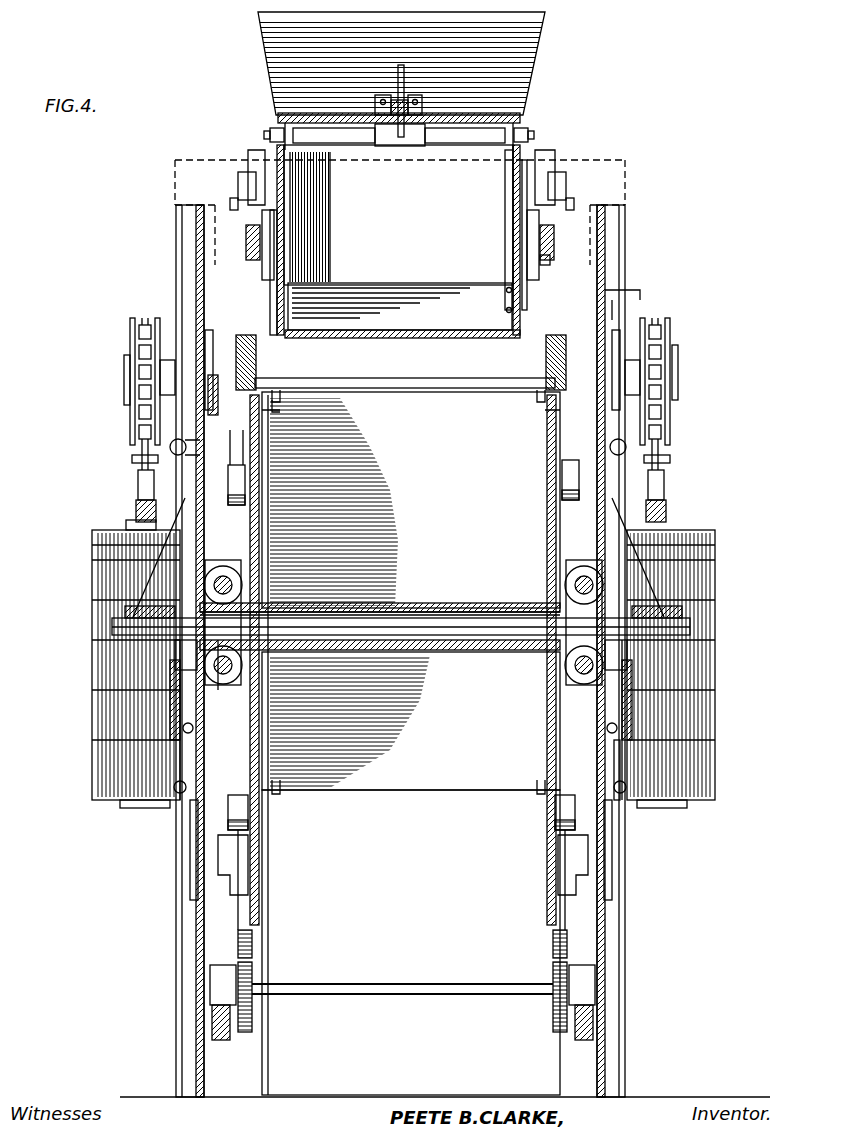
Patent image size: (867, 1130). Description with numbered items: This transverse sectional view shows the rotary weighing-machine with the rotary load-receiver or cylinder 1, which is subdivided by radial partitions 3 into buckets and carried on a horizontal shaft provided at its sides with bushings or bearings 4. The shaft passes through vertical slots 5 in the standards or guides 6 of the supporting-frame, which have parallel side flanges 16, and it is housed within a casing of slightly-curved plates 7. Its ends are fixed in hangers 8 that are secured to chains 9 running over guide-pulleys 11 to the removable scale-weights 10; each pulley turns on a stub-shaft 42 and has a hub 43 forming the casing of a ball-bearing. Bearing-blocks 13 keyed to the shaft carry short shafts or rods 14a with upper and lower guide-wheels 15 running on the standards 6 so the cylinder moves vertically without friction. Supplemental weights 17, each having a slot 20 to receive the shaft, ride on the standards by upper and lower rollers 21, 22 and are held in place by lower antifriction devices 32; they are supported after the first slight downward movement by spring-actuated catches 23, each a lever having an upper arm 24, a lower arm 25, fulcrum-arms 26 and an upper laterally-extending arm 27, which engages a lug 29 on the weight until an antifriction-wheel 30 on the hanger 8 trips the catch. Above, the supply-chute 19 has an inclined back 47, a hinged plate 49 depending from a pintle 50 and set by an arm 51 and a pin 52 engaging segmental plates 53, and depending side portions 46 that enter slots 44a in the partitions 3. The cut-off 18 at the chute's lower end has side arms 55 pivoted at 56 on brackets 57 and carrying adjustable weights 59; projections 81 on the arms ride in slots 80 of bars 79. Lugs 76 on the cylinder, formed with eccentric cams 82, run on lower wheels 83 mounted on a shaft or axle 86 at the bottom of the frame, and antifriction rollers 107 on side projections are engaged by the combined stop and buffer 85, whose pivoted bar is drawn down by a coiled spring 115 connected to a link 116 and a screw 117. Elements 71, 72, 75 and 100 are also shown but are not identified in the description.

The rotary load-receiver 1 is at (390, 782).
The radial partitions 3 is at (420, 800).
The bushings or bearings 4 is at (280, 603).
The vertical slots 5 is at (180, 668).
The vertical standards or guides 6 is at (190, 895).
The slightly-curved plates 7 is at (400, 610).
The hangers 8 is at (125, 612).
The chains 9 is at (146, 318).
The scale-weights 10 is at (92, 738).
The guide-pulleys 11 is at (130, 333).
The bearing-blocks 13 is at (175, 375).
The short shafts or rods 14a is at (565, 590).
The guide-wheels 15 is at (280, 718).
The parallel side flanges 16 is at (176, 870).
The supplemental weights 17 is at (180, 688).
The cut-off 18 is at (396, 338).
The supply-chute 19 is at (290, 36).
The slot 20 is at (175, 652).
The upper antifriction roller 21 is at (178, 447).
The lower antifriction roller 22 is at (183, 732).
The spring-actuated catches 23 is at (126, 524).
The upper arm 24 is at (138, 490).
The lower arm 25 is at (140, 548).
The fulcrum-arms 26 is at (136, 512).
The upper laterally-extending arm 27 is at (146, 470).
The lug or projection 29 is at (172, 442).
The antifriction-wheel 30 is at (186, 520).
The lower antifriction devices 32 is at (180, 795).
The stub-shaft 42 is at (178, 383).
The hub 43 is at (640, 372).
The slots 44a is at (280, 398).
The depending portions 46 is at (262, 350).
The bottom or back 47 is at (410, 305).
The hinged plate 49 is at (398, 240).
The shaft or pintle 50 is at (512, 125).
The centrally-arranged arm 51 is at (404, 72).
The pin or key 52 is at (408, 100).
The segmental plates 53 is at (422, 104).
The upwardly-extending arms 55 is at (270, 294).
The pivots 56 is at (246, 240).
The plates or brackets 57 is at (262, 178).
The adjustable weights 59 is at (238, 183).
The arm 71 is at (630, 300).
The arm 72 is at (638, 320).
The plate 75 is at (662, 341).
The lugs 76 is at (232, 875).
The bars 79 is at (262, 262).
The curved openings 80 is at (550, 262).
The projections 81 is at (522, 236).
The eccentrically-arranged cams 82 is at (252, 940).
The lower wheels 83 is at (252, 975).
The combined stop and buffer 85 is at (262, 445).
The transverse shaft or axle 86 is at (320, 996).
The bar 100 is at (245, 470).
The antifriction sleeves or rollers 107 is at (262, 490).
The coiled spring 115 is at (220, 383).
The link 116 is at (272, 415).
The screw 117 is at (285, 404).